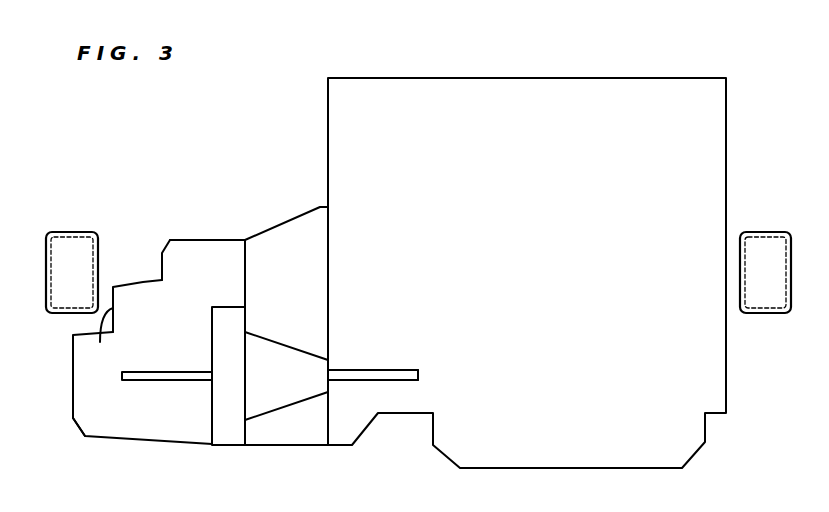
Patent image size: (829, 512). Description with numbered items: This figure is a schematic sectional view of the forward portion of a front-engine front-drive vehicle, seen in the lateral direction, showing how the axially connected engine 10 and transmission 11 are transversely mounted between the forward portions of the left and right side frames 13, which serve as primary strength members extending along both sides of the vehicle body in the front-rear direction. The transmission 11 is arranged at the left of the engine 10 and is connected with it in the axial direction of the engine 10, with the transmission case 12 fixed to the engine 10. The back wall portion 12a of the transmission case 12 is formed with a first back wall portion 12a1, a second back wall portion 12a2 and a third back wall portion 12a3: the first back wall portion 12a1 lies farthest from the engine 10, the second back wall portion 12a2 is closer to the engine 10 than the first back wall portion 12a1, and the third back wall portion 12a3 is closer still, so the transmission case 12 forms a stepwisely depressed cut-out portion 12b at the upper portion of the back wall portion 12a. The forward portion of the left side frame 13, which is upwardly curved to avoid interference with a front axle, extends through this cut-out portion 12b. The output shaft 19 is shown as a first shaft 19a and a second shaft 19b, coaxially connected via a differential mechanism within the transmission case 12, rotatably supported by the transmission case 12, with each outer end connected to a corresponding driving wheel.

The engine 10 is at (541, 78).
The transmission 11 is at (154, 181).
The transmission case 12 is at (211, 238).
The back wall portion 12a is at (72, 377).
The first back wall portion 12a1 is at (72, 402).
The second back wall portion 12a2 is at (115, 338).
The third back wall portion 12a3 is at (162, 270).
The cut-out portion 12b is at (109, 247).
The side frame 13 is at (75, 232).
The output shaft 19 is at (373, 375).
The first shaft 19a is at (172, 381).
The second shaft 19b is at (405, 378).